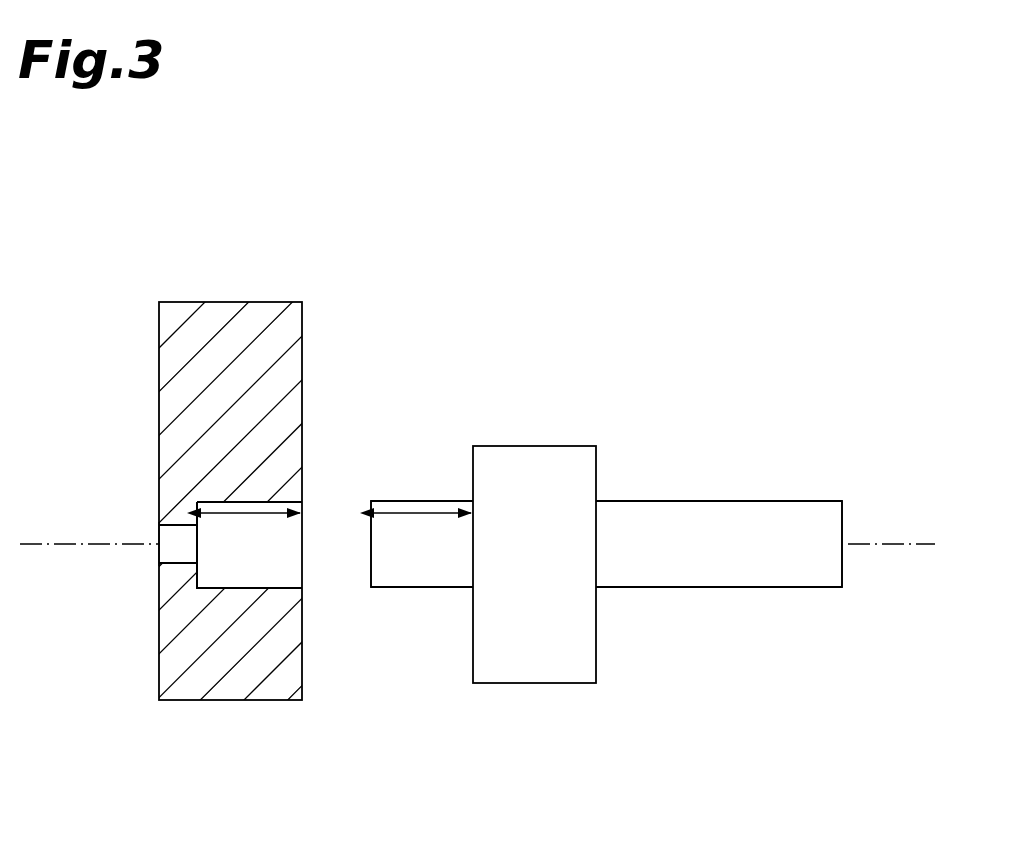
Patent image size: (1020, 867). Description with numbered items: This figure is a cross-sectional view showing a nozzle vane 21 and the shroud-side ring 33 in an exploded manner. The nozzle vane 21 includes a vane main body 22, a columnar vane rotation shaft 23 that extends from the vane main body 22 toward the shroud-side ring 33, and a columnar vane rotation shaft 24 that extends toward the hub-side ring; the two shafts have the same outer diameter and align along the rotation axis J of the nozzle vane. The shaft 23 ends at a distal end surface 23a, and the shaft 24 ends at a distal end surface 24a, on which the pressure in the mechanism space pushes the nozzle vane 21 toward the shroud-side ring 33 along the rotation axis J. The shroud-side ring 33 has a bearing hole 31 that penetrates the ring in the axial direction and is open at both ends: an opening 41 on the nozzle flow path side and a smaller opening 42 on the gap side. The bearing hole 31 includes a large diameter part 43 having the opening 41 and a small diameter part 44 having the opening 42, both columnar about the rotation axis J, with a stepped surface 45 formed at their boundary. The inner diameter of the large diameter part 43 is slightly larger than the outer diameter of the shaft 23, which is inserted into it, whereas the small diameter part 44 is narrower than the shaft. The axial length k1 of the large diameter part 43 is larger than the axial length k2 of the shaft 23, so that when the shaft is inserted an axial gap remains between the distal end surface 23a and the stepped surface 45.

The nozzle vane 21 is at (607, 564).
The vane main body 22 is at (536, 668).
The vane rotation shaft 23 is at (420, 570).
The distal end surface 23a is at (368, 564).
The vane rotation shaft 24 is at (695, 572).
The distal end surface 24a is at (843, 570).
The bearing hole 31 is at (98, 814).
The shroud-side ring 33 is at (233, 328).
The opening 41 is at (302, 532).
The opening 42 is at (158, 532).
The large diameter part 43 is at (237, 588).
The small diameter part 44 is at (179, 563).
The stepped surface 45 is at (198, 568).
The length of the large diameter part k1 is at (256, 510).
The length of the vane rotation shaft k2 is at (420, 508).
The rotation axis J is at (905, 540).